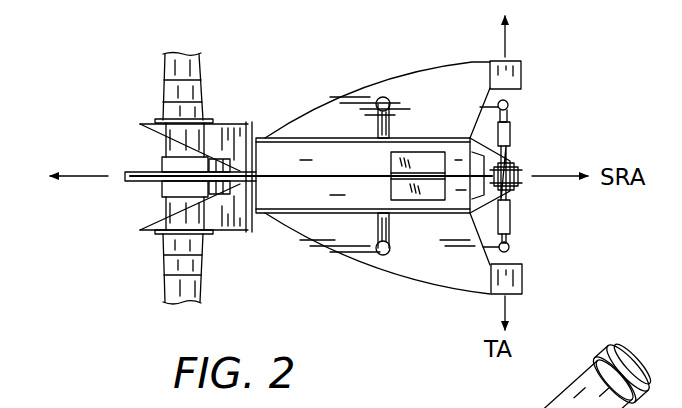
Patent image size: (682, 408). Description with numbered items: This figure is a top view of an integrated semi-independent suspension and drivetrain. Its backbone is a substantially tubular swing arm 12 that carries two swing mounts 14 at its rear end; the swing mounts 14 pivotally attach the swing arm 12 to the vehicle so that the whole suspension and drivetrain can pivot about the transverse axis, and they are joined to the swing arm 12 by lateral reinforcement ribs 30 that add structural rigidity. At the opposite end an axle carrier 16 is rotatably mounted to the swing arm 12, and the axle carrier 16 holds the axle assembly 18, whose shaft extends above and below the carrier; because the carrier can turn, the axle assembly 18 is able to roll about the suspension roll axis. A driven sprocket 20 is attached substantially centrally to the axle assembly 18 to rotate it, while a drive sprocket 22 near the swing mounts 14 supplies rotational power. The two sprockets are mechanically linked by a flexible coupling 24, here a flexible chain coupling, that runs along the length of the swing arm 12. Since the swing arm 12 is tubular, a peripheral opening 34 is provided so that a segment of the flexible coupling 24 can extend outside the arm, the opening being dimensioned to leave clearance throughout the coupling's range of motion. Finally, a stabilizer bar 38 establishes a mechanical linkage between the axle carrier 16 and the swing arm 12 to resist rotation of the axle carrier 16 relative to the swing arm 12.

The swing arm 12 is at (285, 204).
The swing mounts 14 is at (524, 273).
The axle carrier 16 is at (226, 130).
The axle assembly 18 is at (204, 66).
The driven sprocket 20 is at (134, 184).
The drive sprocket 22 is at (516, 167).
The flexible coupling 24 is at (320, 172).
The lateral reinforcement ribs 30 is at (427, 258).
The peripheral opening 34 is at (420, 151).
The stabilizer bar 38 is at (375, 234).